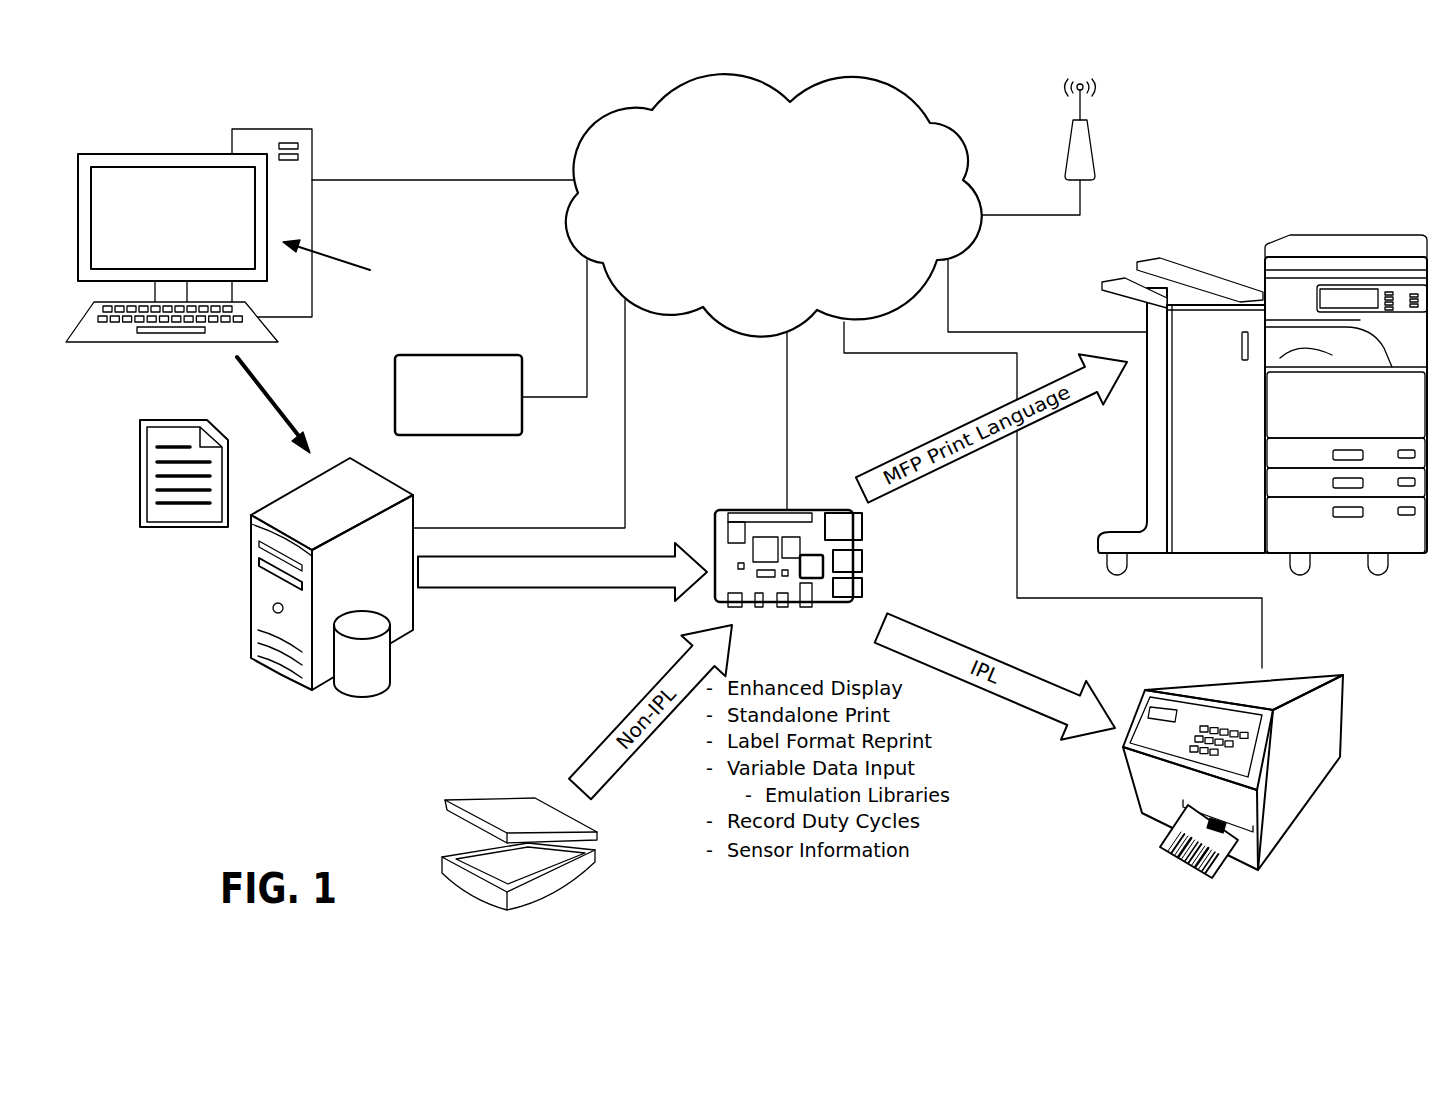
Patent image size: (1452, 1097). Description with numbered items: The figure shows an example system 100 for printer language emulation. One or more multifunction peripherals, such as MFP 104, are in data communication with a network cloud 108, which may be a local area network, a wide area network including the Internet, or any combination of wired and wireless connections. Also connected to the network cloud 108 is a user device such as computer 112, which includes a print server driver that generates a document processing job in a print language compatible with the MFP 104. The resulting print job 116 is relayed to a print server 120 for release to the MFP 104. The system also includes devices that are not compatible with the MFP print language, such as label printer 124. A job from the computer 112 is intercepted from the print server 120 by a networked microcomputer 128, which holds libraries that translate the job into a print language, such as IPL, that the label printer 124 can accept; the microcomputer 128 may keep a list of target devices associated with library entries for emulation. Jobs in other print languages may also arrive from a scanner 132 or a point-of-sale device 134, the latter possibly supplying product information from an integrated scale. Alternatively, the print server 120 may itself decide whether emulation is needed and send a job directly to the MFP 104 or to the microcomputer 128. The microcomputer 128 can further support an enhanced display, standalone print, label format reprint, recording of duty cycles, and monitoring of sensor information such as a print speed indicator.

The system 100 is at (1262, 138).
The MFP 104 is at (1323, 273).
The network cloud 108 is at (907, 93).
The computer 112 is at (312, 162).
The print job 116 is at (140, 460).
The print server 120 is at (413, 618).
The label printer 124 is at (1340, 727).
The microcomputer 128 is at (822, 510).
The scanner 132 is at (577, 873).
The point-of-sale device 134 is at (477, 435).